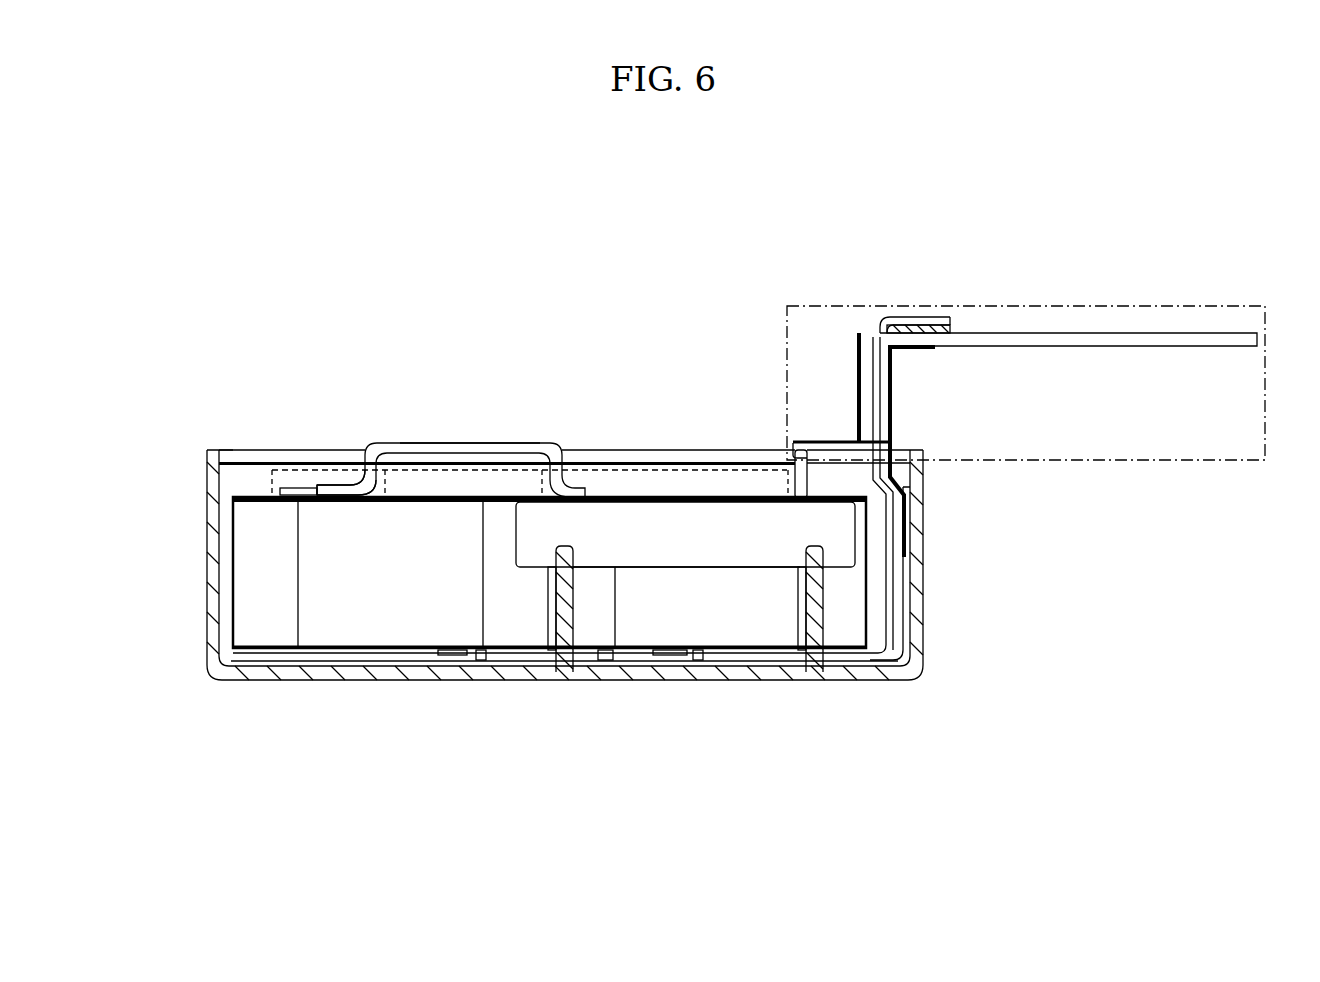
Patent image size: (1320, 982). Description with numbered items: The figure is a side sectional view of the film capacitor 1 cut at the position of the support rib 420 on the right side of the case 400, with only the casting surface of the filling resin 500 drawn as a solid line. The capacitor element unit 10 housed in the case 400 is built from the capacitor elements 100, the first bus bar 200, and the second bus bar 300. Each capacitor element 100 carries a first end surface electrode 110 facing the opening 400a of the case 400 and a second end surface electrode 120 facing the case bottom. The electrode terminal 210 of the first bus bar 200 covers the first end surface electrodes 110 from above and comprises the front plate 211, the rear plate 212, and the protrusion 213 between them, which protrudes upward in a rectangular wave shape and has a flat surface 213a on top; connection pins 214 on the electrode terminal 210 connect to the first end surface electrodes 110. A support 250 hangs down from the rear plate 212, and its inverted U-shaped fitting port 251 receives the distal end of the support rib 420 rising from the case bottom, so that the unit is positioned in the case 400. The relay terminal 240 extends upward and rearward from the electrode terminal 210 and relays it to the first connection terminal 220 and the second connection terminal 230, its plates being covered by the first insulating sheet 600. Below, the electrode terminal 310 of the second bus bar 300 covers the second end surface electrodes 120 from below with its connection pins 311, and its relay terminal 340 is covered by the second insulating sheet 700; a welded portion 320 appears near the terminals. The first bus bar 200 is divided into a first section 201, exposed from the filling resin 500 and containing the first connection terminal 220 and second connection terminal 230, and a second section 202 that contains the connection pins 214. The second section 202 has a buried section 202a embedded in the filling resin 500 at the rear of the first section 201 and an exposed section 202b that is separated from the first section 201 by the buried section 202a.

The film capacitor 1 is at (268, 292).
The capacitor element unit 10 is at (417, 410).
The capacitor element 100 is at (233, 603).
The first end surface electrode 110 is at (248, 498).
The second end surface electrode 120 is at (365, 650).
The first bus bar 200 is at (810, 430).
The first section 201 is at (1087, 305).
The second section 202 is at (305, 578).
The buried section 202a is at (315, 503).
The exposed section 202b is at (460, 470).
The electrode terminal 210 is at (700, 453).
The front plate 211 is at (345, 485).
The rear plate 212 is at (637, 475).
The protrusion 213 is at (566, 444).
The flat surface 213a is at (453, 440).
The connection pin 214 is at (322, 487).
The first connection terminal 220 is at (922, 315).
The second connection terminal 230 is at (1177, 333).
The relay terminal 240 is at (815, 468).
The support 250 is at (693, 567).
The fitting port 251 is at (574, 570).
The second bus bar 300 is at (900, 474).
The electrode terminal 310 is at (766, 668).
The connection pin 311 is at (452, 660).
The welding portion 320 is at (962, 333).
The relay terminal 340 is at (903, 590).
The case 400 is at (210, 547).
The opening 400a is at (233, 450).
The support rib 420 is at (549, 612).
The filling resin 500 is at (258, 462).
The first insulating sheet 600 is at (857, 345).
The second insulating sheet 700 is at (893, 422).